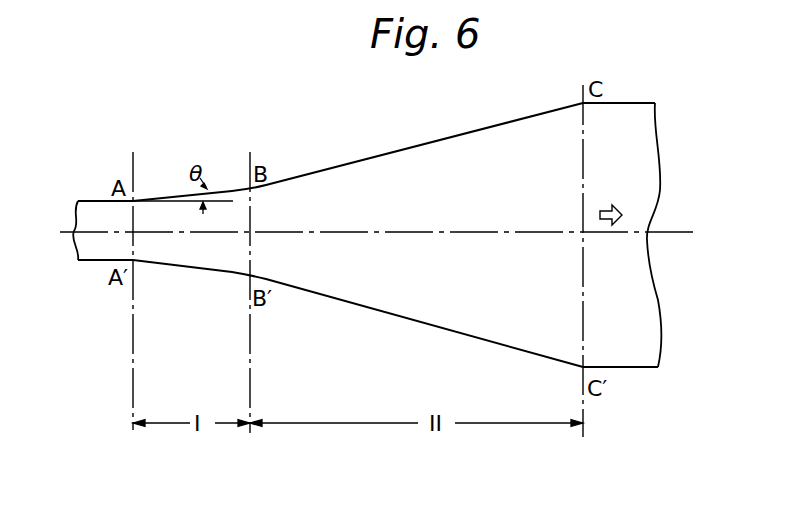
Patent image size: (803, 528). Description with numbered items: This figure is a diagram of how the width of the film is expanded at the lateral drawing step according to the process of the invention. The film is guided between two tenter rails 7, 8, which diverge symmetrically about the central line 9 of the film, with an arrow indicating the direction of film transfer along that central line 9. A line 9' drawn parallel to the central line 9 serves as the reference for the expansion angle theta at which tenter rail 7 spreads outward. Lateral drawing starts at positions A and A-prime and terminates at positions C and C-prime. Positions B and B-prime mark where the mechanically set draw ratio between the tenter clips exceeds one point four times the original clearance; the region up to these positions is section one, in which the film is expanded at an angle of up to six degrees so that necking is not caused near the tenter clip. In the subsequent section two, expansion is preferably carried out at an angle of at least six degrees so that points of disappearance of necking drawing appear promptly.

The tenter rail 7 is at (343, 166).
The tenter rail 8 is at (349, 306).
The central line of the film 9 is at (639, 235).
The line parallel to the central line of the film 9' is at (154, 191).